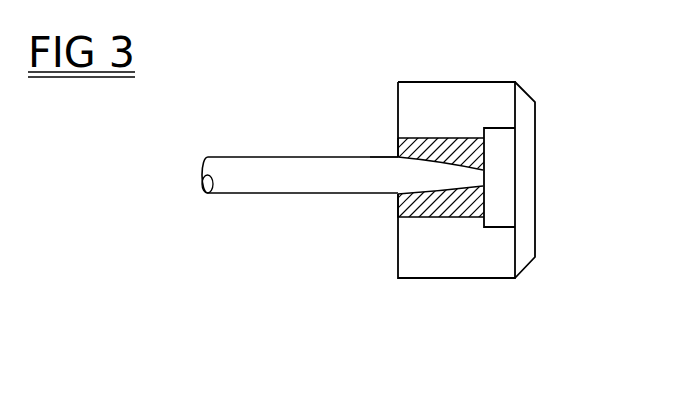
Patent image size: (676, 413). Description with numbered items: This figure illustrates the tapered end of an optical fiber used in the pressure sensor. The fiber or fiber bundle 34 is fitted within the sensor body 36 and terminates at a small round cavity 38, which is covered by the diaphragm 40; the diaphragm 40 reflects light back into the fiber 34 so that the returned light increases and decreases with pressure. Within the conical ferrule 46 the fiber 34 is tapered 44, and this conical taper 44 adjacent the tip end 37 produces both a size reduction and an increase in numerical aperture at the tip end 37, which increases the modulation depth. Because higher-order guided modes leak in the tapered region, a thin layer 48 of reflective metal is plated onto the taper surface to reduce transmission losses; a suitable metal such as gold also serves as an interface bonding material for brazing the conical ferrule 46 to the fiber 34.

The fiber 34 is at (299, 192).
The sensor body 36 is at (452, 87).
The tip end 37 is at (486, 175).
The round cavity 38 is at (482, 222).
The diaphragm 40 is at (525, 240).
The conical taper 44 is at (420, 171).
The conical ferrule 46 is at (428, 137).
The thin layer of reflective metal 48 is at (424, 192).